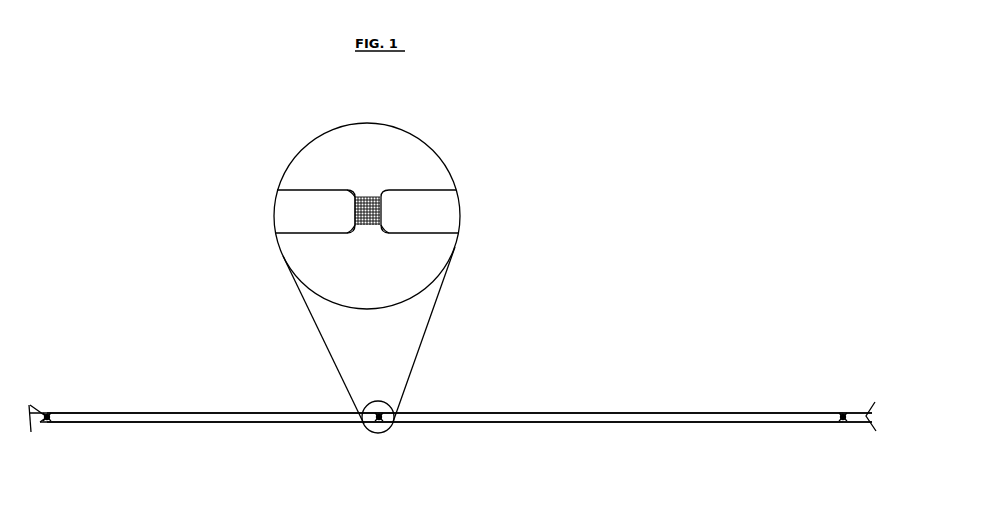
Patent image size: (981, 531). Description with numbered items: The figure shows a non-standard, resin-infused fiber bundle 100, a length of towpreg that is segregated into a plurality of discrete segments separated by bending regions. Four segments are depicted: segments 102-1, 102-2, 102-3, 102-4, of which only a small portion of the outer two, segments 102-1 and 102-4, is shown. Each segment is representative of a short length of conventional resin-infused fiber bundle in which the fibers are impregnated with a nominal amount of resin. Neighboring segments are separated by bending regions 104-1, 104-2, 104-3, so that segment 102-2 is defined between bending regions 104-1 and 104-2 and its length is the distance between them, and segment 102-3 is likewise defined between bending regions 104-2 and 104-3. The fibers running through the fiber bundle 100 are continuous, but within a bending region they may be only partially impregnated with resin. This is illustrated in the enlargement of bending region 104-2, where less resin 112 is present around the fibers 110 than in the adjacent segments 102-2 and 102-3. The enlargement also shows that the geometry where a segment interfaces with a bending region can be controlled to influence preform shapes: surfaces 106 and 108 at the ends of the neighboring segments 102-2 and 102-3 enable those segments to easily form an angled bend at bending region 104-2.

The non-standard, resin-infused fiber bundle 100 is at (619, 396).
The segment 102-1 is at (40, 424).
The segment 102-2 is at (98, 412).
The segment 102-3 is at (518, 424).
The segment 102-4 is at (858, 416).
The bending region 104-1 is at (47, 414).
The bending region 104-2 is at (383, 433).
The bending region 104-3 is at (841, 424).
The surface 106 is at (355, 234).
The surface 108 is at (368, 234).
The fibers 110 is at (358, 196).
The resin 112 is at (330, 199).